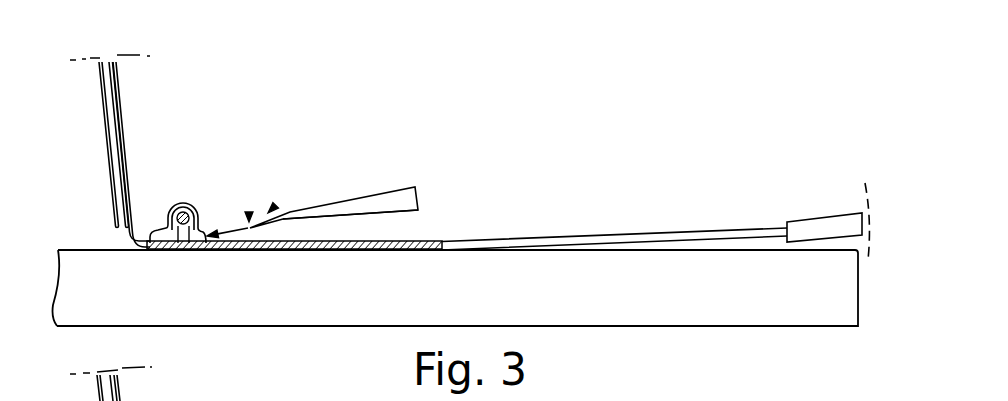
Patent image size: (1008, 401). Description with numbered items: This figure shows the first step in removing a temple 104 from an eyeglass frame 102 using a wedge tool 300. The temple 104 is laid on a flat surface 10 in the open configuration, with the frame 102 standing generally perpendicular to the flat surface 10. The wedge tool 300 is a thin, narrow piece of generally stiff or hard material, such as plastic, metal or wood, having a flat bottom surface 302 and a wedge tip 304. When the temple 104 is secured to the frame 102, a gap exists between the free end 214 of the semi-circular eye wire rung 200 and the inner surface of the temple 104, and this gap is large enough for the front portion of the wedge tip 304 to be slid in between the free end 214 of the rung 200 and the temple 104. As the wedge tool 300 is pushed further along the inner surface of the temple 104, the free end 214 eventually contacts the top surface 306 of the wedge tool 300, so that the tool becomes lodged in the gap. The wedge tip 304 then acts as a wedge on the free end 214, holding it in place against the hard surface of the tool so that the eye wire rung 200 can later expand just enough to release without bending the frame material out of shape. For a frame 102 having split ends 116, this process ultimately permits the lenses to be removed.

The flat surface 10 is at (757, 305).
The eyeglass frame 102 is at (112, 132).
The temple 104 is at (644, 238).
The split ends 116 is at (131, 253).
The eye wire rung 200 is at (183, 202).
The free end of the eye wire rung 214 is at (201, 229).
The wedge tool 300 is at (410, 200).
The flat bottom surface 302 is at (400, 213).
The wedge tip 304 is at (251, 213).
The top surface of the wedge tool 306 is at (276, 206).